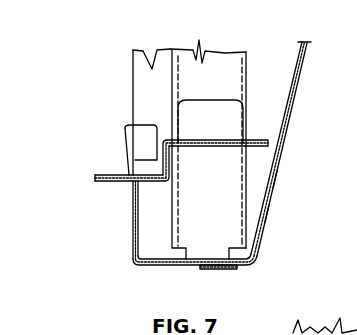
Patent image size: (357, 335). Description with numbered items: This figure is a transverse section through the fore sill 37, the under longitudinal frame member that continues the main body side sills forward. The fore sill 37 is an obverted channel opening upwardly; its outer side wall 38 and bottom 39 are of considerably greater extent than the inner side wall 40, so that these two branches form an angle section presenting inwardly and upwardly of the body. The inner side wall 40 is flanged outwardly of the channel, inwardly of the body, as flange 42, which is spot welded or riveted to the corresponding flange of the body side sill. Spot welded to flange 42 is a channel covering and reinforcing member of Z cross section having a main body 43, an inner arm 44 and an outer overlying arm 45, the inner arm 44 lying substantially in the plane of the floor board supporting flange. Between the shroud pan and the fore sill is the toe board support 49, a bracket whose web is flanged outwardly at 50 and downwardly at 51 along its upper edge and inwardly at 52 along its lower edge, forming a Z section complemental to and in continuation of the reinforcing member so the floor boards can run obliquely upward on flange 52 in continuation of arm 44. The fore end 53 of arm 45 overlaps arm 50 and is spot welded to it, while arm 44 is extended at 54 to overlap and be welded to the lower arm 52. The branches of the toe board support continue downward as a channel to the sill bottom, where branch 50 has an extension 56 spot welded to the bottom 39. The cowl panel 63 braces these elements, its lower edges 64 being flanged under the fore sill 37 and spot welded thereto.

The fore sill 37 is at (266, 174).
The outer side wall 38 is at (260, 204).
The bottom 39 is at (175, 265).
The inner side wall 40 is at (133, 226).
The flange 42 is at (110, 183).
The main body 43 is at (163, 152).
The inner arm 44 is at (159, 155).
The outer overlying arm 45 is at (255, 138).
The toe board support 49 is at (144, 56).
The upper outward flange 50 is at (210, 62).
The downward flange 51 is at (247, 76).
The lower inward flange 52 is at (146, 78).
The fore end of reinforcing member arm 53 is at (205, 108).
The forward extension of inner arm 54 is at (127, 134).
The extension 56 is at (214, 258).
The cowl panel 63 is at (287, 115).
The lower edges 64 is at (225, 270).